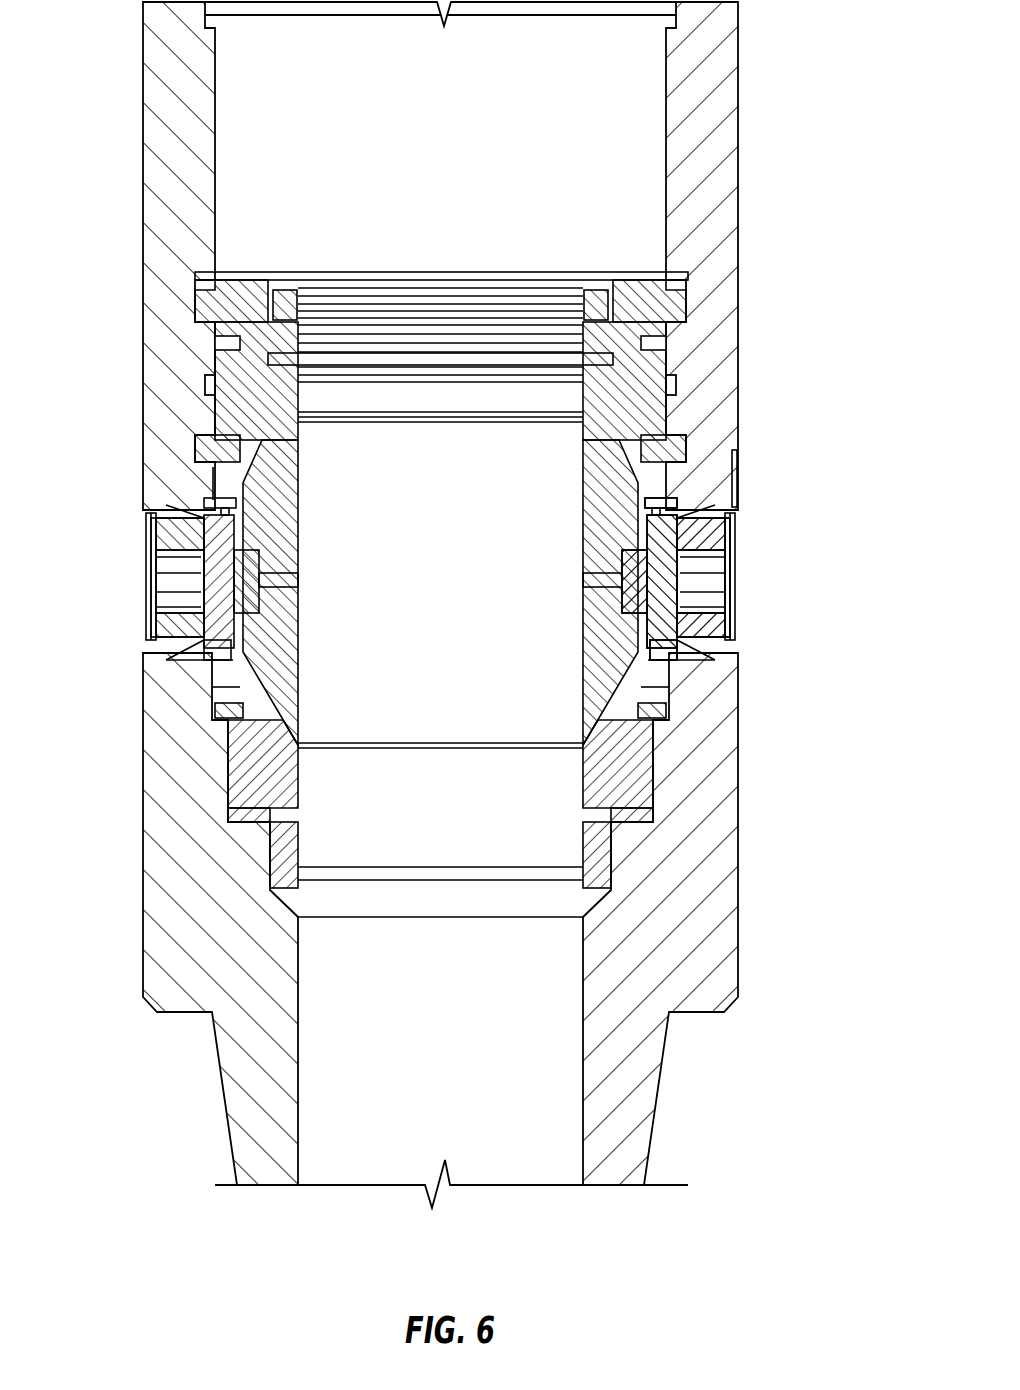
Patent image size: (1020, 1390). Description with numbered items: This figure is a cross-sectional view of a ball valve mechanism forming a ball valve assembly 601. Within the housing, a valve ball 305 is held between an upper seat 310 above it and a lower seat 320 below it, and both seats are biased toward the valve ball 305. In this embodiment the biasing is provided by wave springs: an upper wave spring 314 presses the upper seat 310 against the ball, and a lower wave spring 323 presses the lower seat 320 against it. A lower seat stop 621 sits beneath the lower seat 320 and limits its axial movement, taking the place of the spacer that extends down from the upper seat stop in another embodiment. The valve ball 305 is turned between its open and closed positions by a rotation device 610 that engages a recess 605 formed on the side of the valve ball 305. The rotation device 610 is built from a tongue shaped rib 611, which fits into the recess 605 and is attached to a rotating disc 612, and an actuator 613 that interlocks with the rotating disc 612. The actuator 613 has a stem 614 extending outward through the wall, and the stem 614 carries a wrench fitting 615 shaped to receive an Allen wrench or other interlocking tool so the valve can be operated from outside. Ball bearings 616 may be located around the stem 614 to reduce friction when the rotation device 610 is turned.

The ball valve assembly 601 is at (515, 243).
The upper wave spring 314 is at (198, 298).
The upper seat 310 is at (205, 401).
The valve ball 305 is at (290, 489).
The recess 605 is at (263, 565).
The lower seat stop 621 is at (243, 712).
The lower seat 320 is at (222, 784).
The lower wave spring 323 is at (256, 827).
The rotation device 610 is at (752, 634).
The tongue shaped rib 611 is at (610, 566).
The rotating disc 612 is at (645, 648).
The actuator 613 is at (735, 509).
The stem 614 is at (722, 535).
The wrench fitting 615 is at (712, 575).
The ball bearings 616 is at (700, 525).